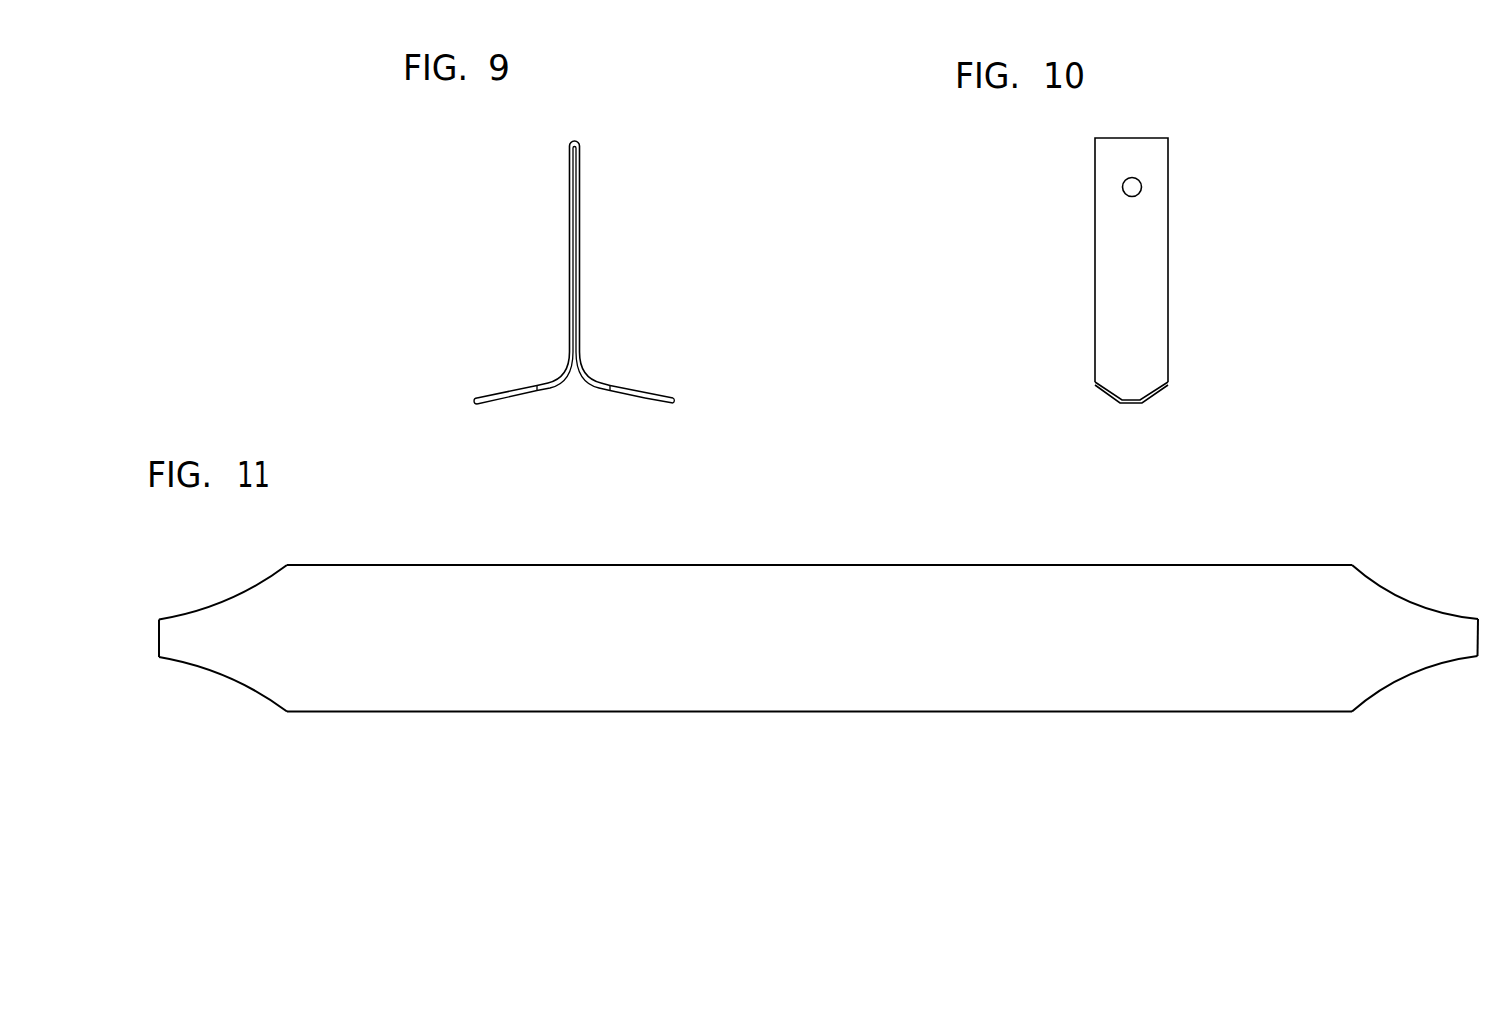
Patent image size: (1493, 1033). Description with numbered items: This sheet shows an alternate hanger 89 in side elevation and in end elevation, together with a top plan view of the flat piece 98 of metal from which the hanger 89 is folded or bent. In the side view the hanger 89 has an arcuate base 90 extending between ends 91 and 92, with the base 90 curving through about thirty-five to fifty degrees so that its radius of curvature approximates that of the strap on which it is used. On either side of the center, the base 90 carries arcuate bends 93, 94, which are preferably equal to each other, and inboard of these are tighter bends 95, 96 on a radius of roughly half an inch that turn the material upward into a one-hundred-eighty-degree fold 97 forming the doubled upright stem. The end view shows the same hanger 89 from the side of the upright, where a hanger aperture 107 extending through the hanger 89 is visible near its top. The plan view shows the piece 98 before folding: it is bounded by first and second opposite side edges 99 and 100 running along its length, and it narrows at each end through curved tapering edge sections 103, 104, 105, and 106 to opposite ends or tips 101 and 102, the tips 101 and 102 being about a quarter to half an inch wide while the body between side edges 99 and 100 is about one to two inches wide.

In FIG. 9, the hanger 89 is at (516, 230).
In FIG. 10, the hanger 89 is at (1060, 265).
In FIG. 9, the base 90 is at (653, 397).
In FIG. 9, the end 91 is at (473, 404).
In FIG. 9, the end 92 is at (673, 401).
In FIG. 9, the arcuate bend 93 is at (535, 392).
In FIG. 9, the arcuate bend 94 is at (617, 390).
In FIG. 9, the bend 95 is at (565, 376).
In FIG. 9, the bend 96 is at (587, 373).
In FIG. 9, the fold 97 is at (575, 138).
In FIG. 11, the piece 98 is at (349, 544).
In FIG. 11, the first side edge 99 is at (480, 563).
In FIG. 11, the second side edge 100 is at (510, 713).
In FIG. 11, the tip 101 is at (1479, 647).
In FIG. 11, the tip 102 is at (163, 637).
In FIG. 11, the tapering edge section 103 is at (237, 600).
In FIG. 11, the tapering edge section 104 is at (238, 680).
In FIG. 11, the tapering edge section 105 is at (1415, 605).
In FIG. 11, the tapering edge section 106 is at (1410, 673).
In FIG. 10, the hanger aperture 107 is at (1135, 184).